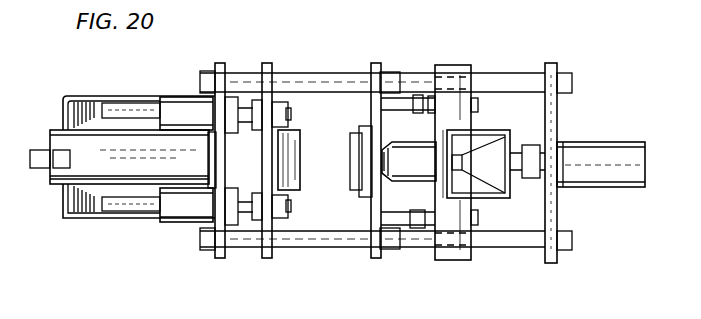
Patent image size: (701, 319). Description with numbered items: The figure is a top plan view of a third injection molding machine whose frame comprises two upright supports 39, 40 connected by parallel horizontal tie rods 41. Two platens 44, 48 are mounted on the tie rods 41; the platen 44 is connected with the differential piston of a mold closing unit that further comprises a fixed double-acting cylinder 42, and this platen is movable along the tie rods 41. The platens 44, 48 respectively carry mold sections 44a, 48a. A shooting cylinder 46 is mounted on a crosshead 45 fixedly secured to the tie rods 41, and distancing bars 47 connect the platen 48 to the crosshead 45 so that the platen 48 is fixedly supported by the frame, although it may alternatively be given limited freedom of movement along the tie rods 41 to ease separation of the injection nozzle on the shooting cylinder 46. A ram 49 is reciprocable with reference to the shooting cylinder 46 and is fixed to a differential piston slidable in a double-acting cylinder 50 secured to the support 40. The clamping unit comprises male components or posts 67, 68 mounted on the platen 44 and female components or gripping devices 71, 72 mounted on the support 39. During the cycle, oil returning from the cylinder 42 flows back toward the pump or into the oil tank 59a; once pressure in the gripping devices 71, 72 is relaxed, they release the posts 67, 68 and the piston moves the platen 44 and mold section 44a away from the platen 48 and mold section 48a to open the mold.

The upright support 39 is at (219, 66).
The upright support 40 is at (549, 68).
The tie rods 41 is at (300, 79).
The double-acting cylinder 42 is at (60, 186).
The platen 44 is at (269, 66).
The mold section 44a is at (296, 131).
The crosshead 45 is at (458, 76).
The shooting cylinder 46 is at (408, 150).
The distancing bars 47 is at (404, 100).
The platen 48 is at (376, 66).
The mold section 48a is at (355, 183).
The ram 49 is at (516, 148).
The double-acting cylinder 50 is at (612, 150).
The oil tank 59a is at (64, 119).
The post 67 is at (114, 114).
The post 68 is at (133, 207).
The gripping device 71 is at (172, 103).
The gripping device 72 is at (184, 210).